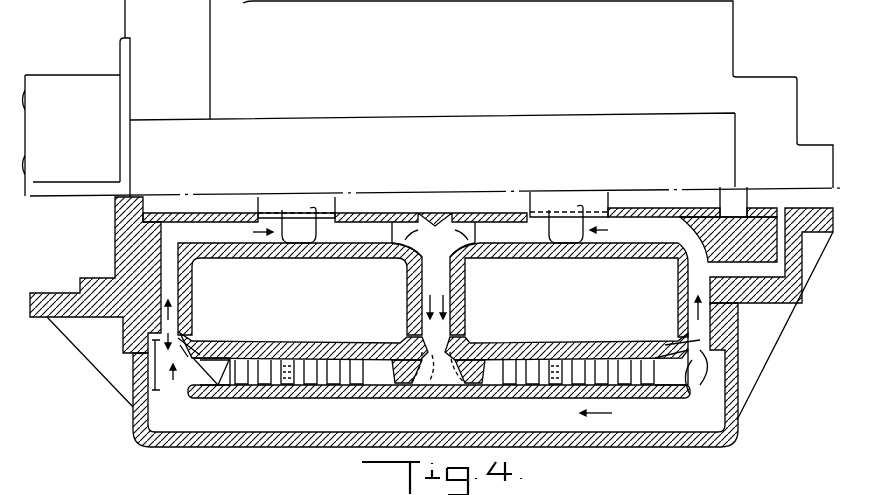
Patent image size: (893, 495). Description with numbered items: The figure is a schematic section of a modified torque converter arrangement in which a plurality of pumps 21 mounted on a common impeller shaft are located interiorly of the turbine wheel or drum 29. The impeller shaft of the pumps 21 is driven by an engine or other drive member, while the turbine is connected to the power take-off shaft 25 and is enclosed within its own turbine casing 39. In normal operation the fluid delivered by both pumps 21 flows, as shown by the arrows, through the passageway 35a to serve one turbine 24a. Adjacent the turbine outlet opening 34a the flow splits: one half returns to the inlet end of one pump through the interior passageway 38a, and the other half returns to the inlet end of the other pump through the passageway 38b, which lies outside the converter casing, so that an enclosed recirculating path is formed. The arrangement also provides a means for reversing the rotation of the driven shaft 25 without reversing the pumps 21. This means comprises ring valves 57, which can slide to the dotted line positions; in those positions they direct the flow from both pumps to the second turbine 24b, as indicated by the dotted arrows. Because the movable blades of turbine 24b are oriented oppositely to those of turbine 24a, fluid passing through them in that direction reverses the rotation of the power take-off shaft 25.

The pump 21 is at (297, 228).
The interior passageway 38a is at (672, 230).
The passageway 35a is at (441, 287).
The power take-off shaft 25 is at (48, 318).
The ring valve 57 is at (183, 360).
The turbine 24b is at (217, 383).
The turbine casing 39 is at (481, 390).
The turbine 24a is at (536, 382).
The passageway 38b is at (567, 422).
The turbine outlet opening 34a is at (653, 375).
The turbine wheel 29 is at (738, 362).